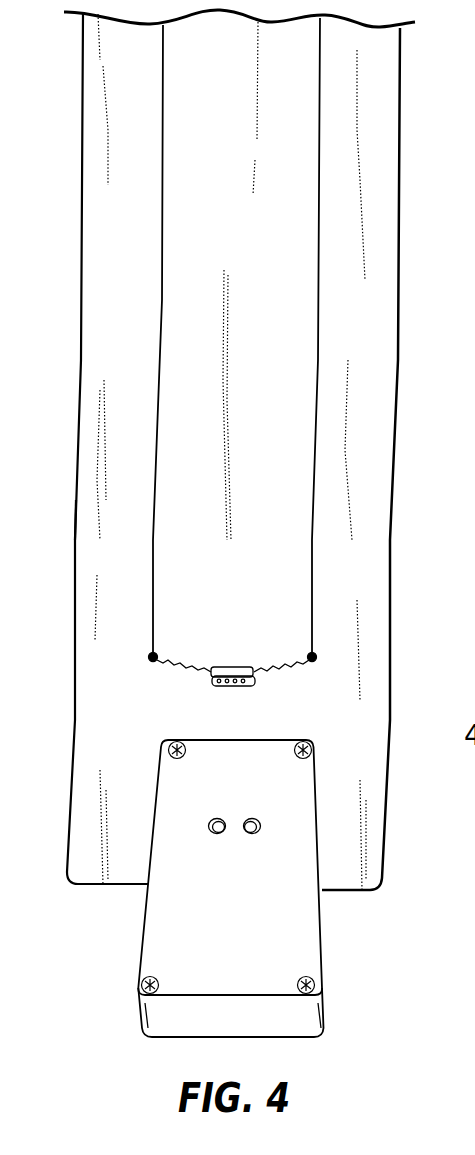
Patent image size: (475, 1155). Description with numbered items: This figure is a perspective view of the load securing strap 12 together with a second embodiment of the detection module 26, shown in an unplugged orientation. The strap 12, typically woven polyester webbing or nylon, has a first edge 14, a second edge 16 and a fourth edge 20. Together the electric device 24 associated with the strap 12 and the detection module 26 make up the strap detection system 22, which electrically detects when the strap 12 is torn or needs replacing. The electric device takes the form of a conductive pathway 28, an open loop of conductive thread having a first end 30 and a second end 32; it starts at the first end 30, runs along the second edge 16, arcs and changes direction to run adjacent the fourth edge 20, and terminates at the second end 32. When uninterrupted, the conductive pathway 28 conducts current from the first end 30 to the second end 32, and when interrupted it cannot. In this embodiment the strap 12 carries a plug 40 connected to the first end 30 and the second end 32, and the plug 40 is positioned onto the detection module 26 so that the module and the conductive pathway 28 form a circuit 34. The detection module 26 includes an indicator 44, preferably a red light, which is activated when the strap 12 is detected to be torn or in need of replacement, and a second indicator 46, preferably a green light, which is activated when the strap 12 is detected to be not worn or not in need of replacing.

The strap 12 is at (100, 292).
The first edge 14 is at (120, 887).
The second edge 16 is at (75, 515).
The fourth edge 20 is at (393, 523).
The strap detection system 22 is at (231, 479).
The electric device 24 is at (318, 405).
The detection module 26 is at (275, 953).
The conductive pathway 28 is at (158, 430).
The first end 30 is at (153, 661).
The second end 32 is at (316, 661).
The circuit 34 is at (317, 249).
The plug 40 is at (227, 667).
The indicator 44 is at (212, 821).
The second indicator 46 is at (259, 819).